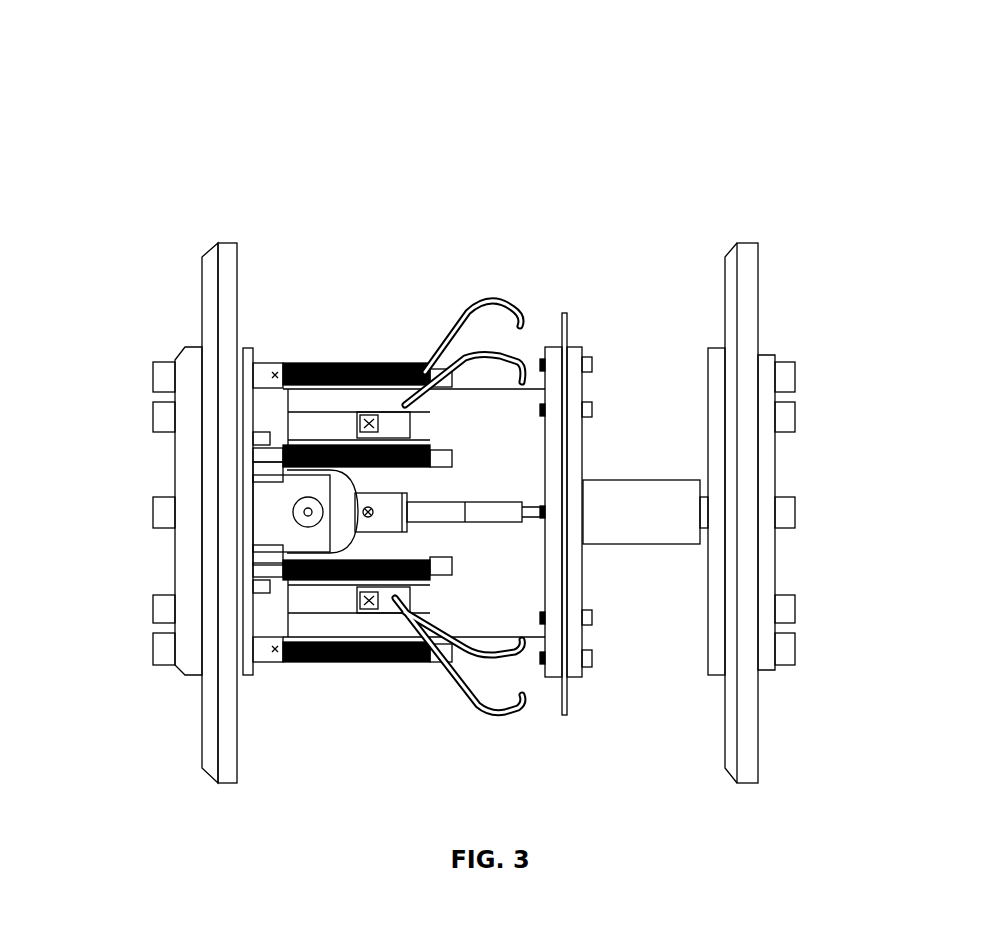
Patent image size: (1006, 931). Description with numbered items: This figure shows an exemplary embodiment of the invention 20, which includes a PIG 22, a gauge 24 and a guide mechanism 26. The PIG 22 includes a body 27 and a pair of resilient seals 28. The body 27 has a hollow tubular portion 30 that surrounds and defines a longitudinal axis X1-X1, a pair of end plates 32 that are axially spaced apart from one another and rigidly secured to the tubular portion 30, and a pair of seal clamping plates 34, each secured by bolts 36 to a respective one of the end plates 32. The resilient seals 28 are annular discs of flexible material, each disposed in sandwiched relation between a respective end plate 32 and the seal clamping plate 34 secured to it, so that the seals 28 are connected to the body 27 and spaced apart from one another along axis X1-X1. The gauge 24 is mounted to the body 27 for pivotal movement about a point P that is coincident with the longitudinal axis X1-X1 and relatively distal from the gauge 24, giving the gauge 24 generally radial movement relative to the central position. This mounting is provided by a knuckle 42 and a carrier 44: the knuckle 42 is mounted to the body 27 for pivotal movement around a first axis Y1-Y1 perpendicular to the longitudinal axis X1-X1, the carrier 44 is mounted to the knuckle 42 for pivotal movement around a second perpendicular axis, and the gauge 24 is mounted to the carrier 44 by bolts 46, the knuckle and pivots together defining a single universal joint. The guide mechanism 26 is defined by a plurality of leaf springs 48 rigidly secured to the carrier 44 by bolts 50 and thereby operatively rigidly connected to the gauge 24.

The exemplary embodiment of the invention 20 is at (940, 90).
The PIG 22 is at (32, 102).
The gauge 24 is at (565, 740).
The guide mechanism 26 is at (331, 690).
The body 27 is at (138, 168).
The resilient seals 28 is at (228, 490).
The hollow tubular portion 30 is at (667, 478).
The end plates 32 is at (247, 350).
The seal clamping plates 34 is at (192, 350).
The bolts 36 is at (160, 607).
The knuckle 42 is at (310, 488).
The carrier 44 is at (530, 386).
The bolts 46 is at (592, 358).
The leaf springs 48 is at (400, 660).
The bolts 50 is at (372, 412).
The point P is at (296, 522).
The longitudinal axis X1- X1 is at (118, 512).
The first axis Y1- Y1 is at (308, 350).